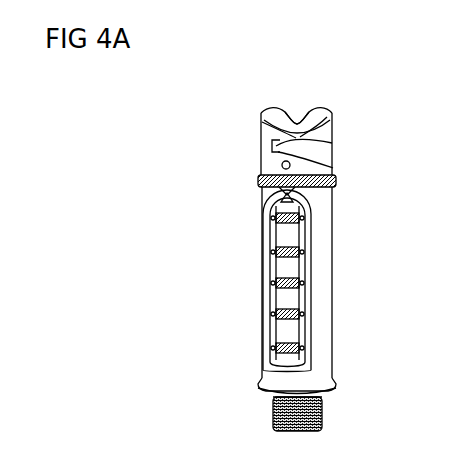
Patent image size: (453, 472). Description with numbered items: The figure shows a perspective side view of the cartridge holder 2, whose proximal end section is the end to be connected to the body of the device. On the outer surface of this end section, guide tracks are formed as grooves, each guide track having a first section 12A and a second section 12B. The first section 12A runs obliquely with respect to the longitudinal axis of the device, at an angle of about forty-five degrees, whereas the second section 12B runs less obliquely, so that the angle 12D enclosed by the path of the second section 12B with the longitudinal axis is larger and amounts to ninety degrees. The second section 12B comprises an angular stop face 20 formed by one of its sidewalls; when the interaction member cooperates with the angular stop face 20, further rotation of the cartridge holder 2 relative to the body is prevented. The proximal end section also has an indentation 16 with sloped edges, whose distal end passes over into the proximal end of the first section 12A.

The angle 12D is at (193, 254).
The cartridge holder 2 is at (333, 327).
The first section 12A is at (332, 143).
The second section 12B is at (333, 168).
The indentation 16 is at (296, 114).
The angular stop face 20 is at (268, 149).